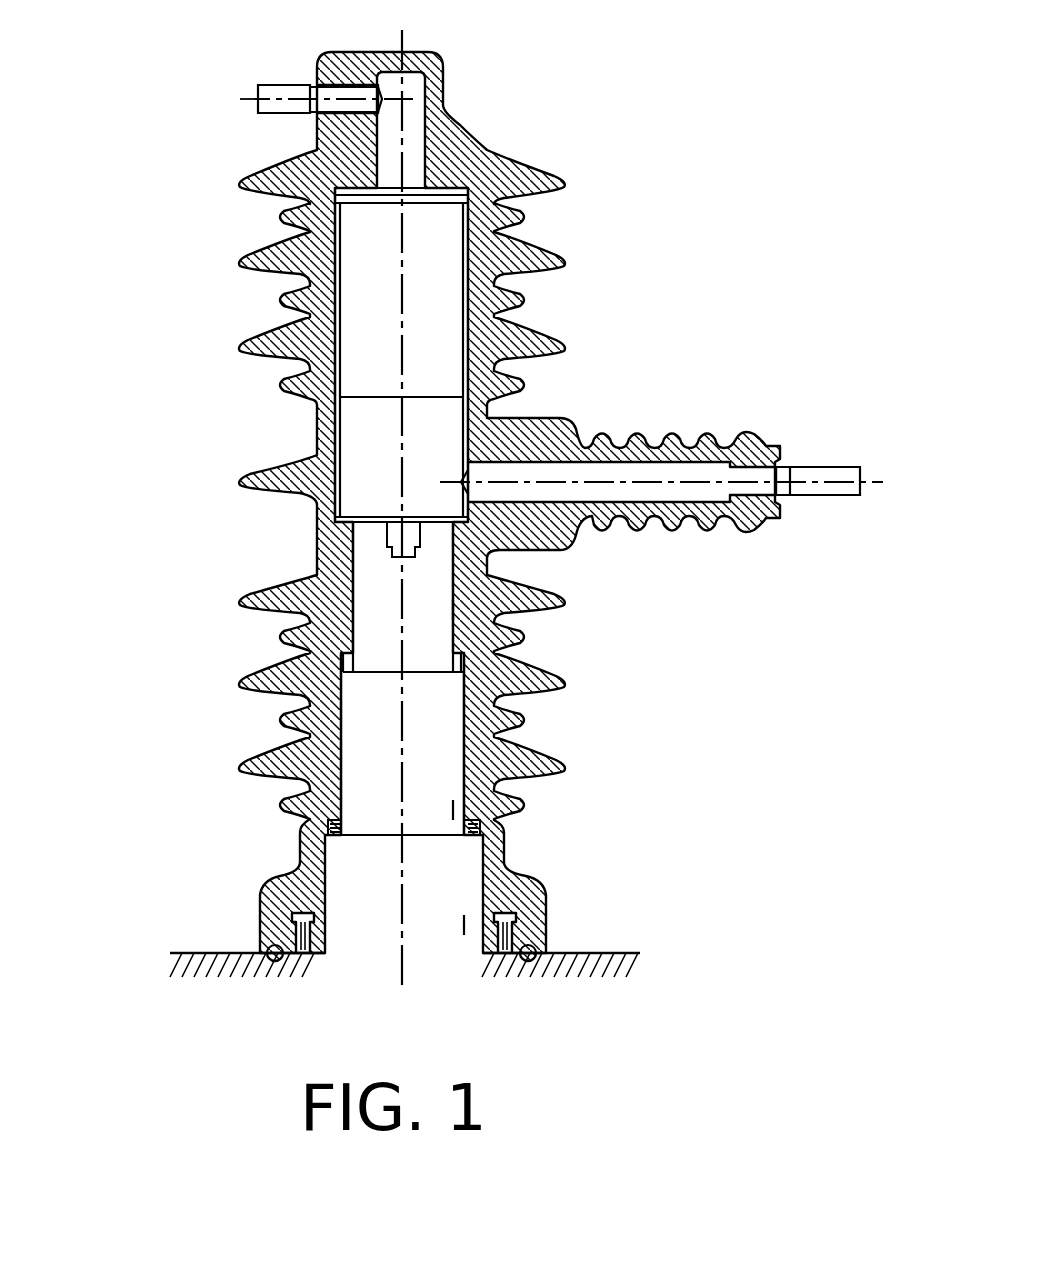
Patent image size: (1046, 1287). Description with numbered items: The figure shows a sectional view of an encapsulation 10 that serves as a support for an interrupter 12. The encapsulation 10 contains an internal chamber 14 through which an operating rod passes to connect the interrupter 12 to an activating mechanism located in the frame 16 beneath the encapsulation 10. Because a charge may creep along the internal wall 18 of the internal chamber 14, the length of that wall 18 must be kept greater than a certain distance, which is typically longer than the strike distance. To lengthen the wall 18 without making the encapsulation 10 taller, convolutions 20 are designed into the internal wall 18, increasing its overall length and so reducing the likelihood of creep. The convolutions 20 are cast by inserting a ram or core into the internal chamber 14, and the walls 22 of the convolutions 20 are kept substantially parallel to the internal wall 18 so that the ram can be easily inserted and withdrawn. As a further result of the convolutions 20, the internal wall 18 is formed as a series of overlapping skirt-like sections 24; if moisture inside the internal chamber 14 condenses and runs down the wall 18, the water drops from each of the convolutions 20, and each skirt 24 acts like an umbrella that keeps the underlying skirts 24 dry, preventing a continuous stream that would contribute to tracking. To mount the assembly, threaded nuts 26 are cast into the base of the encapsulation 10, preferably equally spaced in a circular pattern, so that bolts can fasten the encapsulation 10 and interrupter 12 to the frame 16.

The encapsulation 10 is at (242, 397).
The interrupter 12 is at (437, 240).
The internal chamber 14 is at (430, 637).
The frame 16 is at (605, 953).
The internal wall 18 is at (343, 790).
The convolutions 20 is at (440, 668).
The walls of the convolutions 22 is at (482, 830).
The skirt-like sections 24 is at (449, 613).
The threaded nuts 26 is at (262, 922).